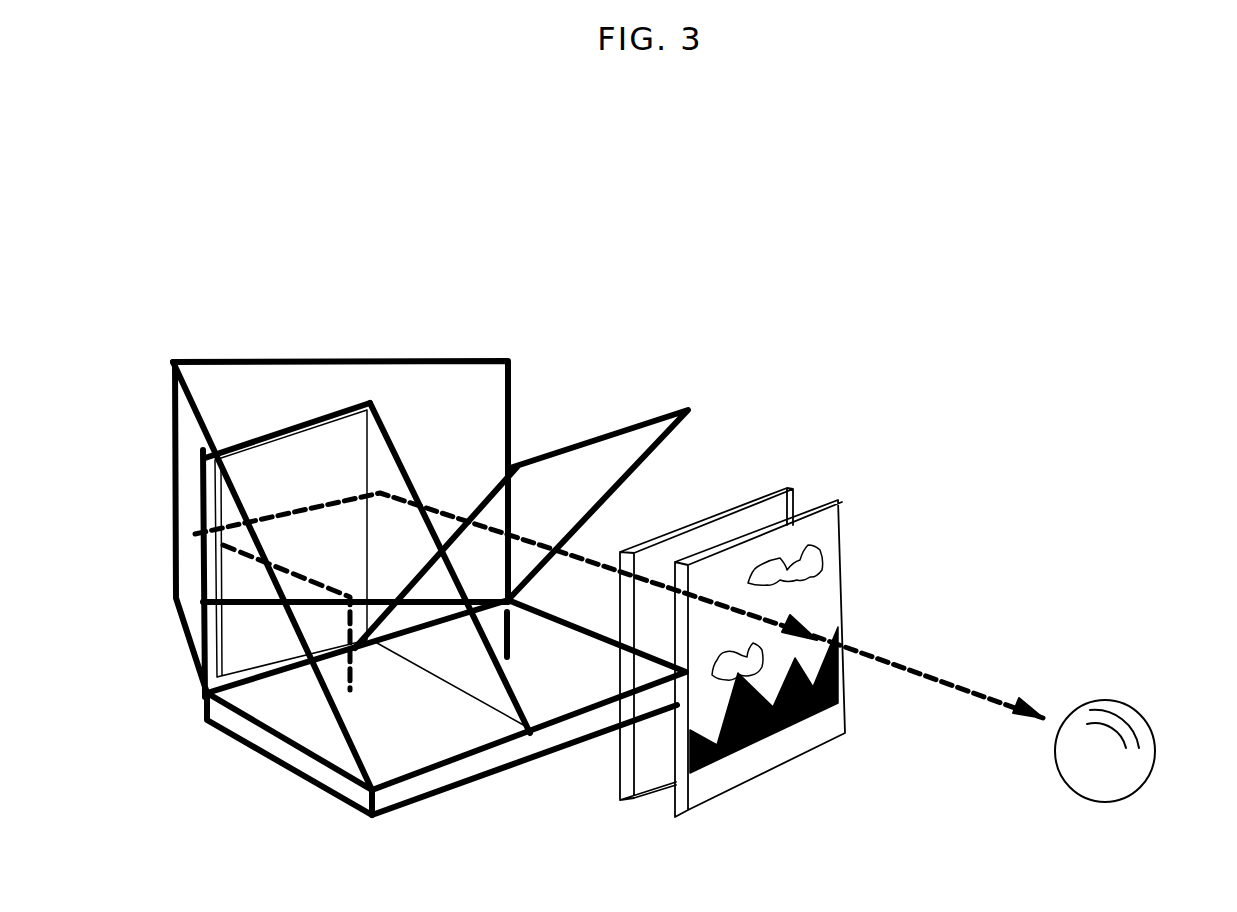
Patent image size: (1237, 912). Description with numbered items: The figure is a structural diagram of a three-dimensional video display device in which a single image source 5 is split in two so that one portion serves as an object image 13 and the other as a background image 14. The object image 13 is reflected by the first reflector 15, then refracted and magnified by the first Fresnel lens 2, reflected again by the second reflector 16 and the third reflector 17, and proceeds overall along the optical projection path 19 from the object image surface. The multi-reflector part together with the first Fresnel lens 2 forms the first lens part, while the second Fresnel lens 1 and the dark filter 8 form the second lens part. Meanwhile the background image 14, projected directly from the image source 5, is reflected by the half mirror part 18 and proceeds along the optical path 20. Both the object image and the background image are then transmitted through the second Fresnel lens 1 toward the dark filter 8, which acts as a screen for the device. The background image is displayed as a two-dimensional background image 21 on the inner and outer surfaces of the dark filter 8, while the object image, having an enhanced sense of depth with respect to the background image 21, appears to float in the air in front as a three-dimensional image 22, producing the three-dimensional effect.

The second Fresnel lens 1 is at (750, 500).
The first Fresnel lens 2 is at (303, 437).
The image source 5 is at (387, 800).
The dark filter 8 is at (817, 507).
The object image 13 is at (293, 715).
The background image 14 is at (565, 688).
The first reflector 15 is at (367, 727).
The second reflector 16 is at (187, 567).
The third reflector 17 is at (413, 387).
The half mirror part 18 is at (627, 443).
The optical projection path 19 is at (1043, 708).
The optical path 20 is at (782, 620).
The 2-dimensional background image 21 is at (763, 737).
The 3-dimensional image 22 is at (1117, 767).